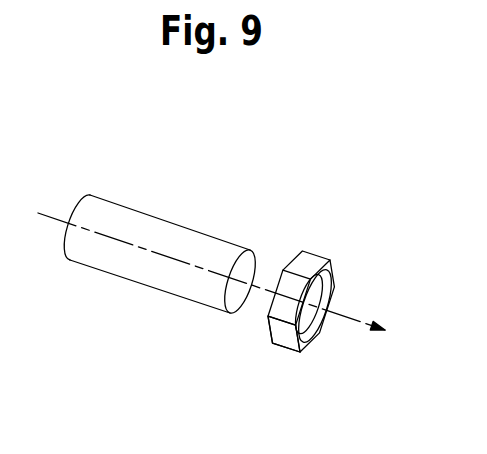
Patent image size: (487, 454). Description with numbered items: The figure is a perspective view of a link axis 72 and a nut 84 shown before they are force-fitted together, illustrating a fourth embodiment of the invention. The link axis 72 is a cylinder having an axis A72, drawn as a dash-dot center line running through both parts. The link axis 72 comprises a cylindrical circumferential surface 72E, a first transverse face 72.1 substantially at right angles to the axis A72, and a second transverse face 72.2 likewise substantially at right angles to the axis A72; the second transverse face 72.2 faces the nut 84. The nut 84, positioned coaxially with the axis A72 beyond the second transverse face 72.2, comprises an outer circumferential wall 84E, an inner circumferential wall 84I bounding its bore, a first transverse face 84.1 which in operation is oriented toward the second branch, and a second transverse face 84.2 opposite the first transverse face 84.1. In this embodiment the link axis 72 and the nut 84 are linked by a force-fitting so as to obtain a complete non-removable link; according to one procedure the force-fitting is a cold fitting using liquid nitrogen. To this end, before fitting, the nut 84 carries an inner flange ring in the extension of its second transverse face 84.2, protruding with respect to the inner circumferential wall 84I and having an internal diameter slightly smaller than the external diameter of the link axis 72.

The axis A72 is at (52, 216).
The link axis 72 is at (134, 205).
The cylindrical circumferential surface 72E is at (181, 224).
The first transverse face 72.1 is at (65, 242).
The second transverse face 72.2 is at (252, 262).
The nut 84 is at (338, 242).
The second transverse face 84.2 is at (329, 272).
The first transverse face 84.1 is at (267, 330).
The outer circumferential wall 84E is at (280, 348).
The inner circumferential wall 84I is at (308, 338).